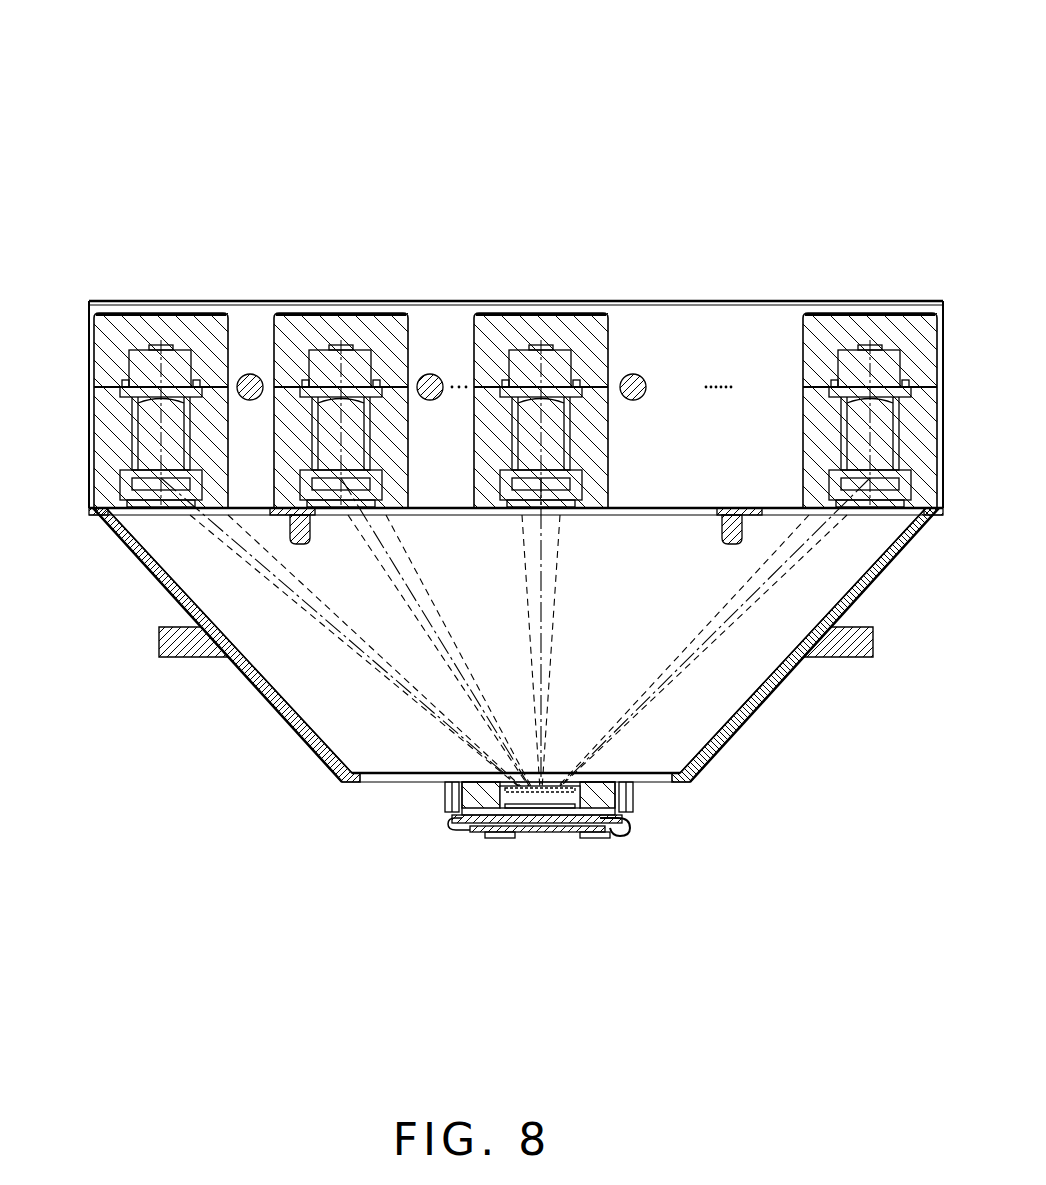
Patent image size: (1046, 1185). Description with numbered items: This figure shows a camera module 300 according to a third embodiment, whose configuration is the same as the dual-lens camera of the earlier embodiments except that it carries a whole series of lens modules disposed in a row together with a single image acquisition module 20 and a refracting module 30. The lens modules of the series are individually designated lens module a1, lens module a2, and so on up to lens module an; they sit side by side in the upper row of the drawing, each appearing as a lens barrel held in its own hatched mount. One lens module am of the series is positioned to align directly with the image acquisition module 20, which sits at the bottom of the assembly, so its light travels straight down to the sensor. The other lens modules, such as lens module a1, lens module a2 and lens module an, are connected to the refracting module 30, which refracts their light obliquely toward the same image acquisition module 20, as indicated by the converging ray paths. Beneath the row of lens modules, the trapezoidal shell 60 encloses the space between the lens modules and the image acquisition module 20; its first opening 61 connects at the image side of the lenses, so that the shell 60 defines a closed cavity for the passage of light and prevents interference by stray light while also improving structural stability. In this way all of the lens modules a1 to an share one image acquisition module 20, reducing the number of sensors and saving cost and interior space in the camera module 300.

The camera module 300 is at (537, 41).
The refracting module 30 is at (143, 492).
The shell 60 is at (128, 546).
The first opening 61 is at (187, 577).
The image acquisition module 20 is at (498, 794).
The lens module a1 is at (143, 313).
The lens module a2 is at (342, 313).
The lens module am is at (548, 313).
The lens module an is at (847, 313).